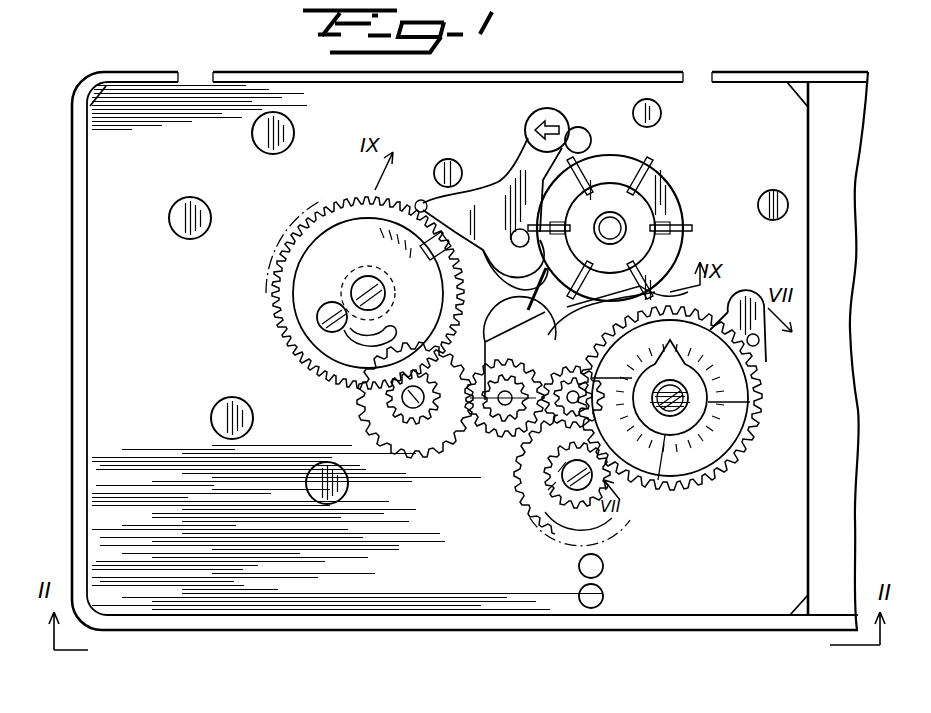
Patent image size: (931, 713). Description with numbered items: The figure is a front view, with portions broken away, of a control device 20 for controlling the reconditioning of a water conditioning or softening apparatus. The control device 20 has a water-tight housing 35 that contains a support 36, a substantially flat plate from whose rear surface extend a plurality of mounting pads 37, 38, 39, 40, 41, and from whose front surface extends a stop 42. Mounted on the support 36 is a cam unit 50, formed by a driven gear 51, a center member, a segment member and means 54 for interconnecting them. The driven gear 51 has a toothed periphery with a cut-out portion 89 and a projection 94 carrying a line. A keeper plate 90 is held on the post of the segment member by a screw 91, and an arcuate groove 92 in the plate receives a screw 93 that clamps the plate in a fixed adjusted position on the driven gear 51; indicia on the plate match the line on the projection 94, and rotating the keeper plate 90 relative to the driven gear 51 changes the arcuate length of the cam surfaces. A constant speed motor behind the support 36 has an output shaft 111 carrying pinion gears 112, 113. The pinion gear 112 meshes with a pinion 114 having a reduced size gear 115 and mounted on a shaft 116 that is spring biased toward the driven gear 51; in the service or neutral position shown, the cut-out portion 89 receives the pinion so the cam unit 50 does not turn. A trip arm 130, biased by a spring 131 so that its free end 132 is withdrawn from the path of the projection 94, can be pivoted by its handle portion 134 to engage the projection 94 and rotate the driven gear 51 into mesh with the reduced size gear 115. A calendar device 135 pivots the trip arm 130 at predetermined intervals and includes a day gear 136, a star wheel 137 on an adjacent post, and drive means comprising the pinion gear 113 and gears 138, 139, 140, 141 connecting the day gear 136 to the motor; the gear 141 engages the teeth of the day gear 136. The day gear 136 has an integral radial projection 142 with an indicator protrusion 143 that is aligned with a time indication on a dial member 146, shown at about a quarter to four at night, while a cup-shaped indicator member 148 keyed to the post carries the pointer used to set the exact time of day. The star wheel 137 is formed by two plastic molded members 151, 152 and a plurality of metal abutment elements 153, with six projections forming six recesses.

The control device 20 is at (321, 643).
The housing 35 is at (677, 618).
The support 36 is at (404, 568).
The mounting pad 37 is at (312, 492).
The mounting pad 38 is at (212, 417).
The mounting pad 39 is at (182, 232).
The mounting pad 40 is at (262, 133).
The mounting pad 41 is at (448, 159).
The stop 42 is at (584, 128).
The cam unit 50 is at (343, 313).
The driven gear 51 is at (292, 345).
The means for interconnecting 54 is at (392, 313).
The cut-out portion 89 is at (358, 412).
The keeper plate 90 is at (358, 256).
The screw 91 is at (385, 294).
The arcuate groove 92 is at (350, 340).
The screw 93 is at (333, 303).
The projection 94 is at (464, 262).
The output shaft 111 is at (428, 405).
The pinion gear 112 is at (511, 367).
The pinion gear 113 is at (502, 424).
The pinion 114 is at (372, 456).
The reduced size gear 115 is at (458, 455).
The shaft 116 is at (418, 420).
The trip arm 130 is at (498, 222).
The spring 131 is at (506, 292).
The free end 132 is at (424, 206).
The handle portion 134 is at (527, 116).
The calendar device 135 is at (649, 214).
The day gear 136 is at (687, 411).
The star wheel 137 is at (690, 275).
The gear 138 is at (563, 382).
The gear 139 is at (562, 402).
The gear 140 is at (512, 488).
The gear 141 is at (540, 518).
The projection 142 is at (736, 300).
The indicator protrusion 143 is at (764, 346).
The dial member 146 is at (750, 440).
The indicator member 148 is at (666, 432).
The molded member 151 is at (672, 186).
The molded member 152 is at (656, 218).
The abutment element 153 is at (660, 166).